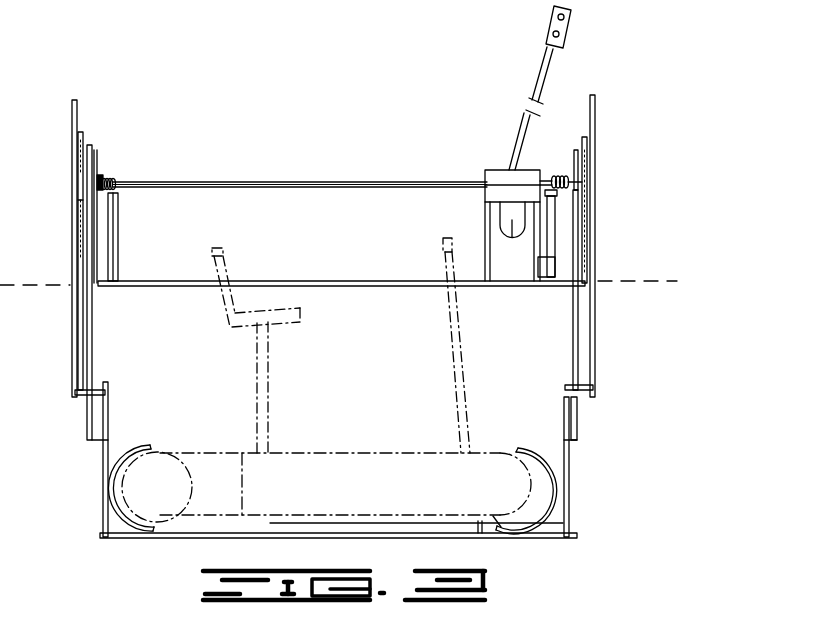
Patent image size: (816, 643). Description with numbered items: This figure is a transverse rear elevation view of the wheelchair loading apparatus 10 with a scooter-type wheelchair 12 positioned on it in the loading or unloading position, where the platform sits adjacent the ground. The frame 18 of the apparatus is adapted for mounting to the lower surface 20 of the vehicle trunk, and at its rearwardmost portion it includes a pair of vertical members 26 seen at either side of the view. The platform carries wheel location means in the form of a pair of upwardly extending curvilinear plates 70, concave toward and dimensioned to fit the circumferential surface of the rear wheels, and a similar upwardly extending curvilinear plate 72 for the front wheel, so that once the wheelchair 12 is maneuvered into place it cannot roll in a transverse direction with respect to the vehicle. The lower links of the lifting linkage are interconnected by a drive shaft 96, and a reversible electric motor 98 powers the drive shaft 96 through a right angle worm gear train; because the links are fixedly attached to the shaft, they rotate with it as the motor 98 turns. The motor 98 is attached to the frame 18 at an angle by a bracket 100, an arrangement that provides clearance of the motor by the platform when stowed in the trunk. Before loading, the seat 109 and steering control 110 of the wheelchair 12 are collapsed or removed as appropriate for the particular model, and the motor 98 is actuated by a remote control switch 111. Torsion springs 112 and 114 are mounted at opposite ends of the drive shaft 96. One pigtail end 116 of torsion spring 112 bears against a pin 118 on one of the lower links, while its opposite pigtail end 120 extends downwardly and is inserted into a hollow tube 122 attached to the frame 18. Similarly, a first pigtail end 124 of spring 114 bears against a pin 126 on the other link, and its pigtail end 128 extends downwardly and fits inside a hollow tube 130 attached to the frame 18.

The wheelchair loading apparatus 10 is at (630, 177).
The scooter-type wheelchair 12 is at (336, 453).
The frame 18 is at (130, 281).
The lower surface 20 is at (645, 280).
The vertical members 26 is at (82, 132).
The curvilinear plates 70 is at (140, 447).
The curvilinear plate 72 is at (545, 445).
The drive shaft 96 is at (322, 182).
The reversible electric motor 98 is at (515, 228).
The bracket 100 is at (550, 270).
The seat 109 is at (230, 268).
The steering control 110 is at (443, 250).
The remote control switch 111 is at (570, 25).
The torsion spring 112 is at (90, 200).
The torsion spring 114 is at (556, 180).
The pigtail end 116 is at (112, 181).
The pin 118 is at (100, 176).
The pigtail end 120 is at (135, 184).
The hollow tube 122 is at (118, 222).
The pigtail end 124 is at (580, 140).
The pin 126 is at (578, 186).
The pigtail end 128 is at (558, 193).
The hollow tube 130 is at (556, 220).